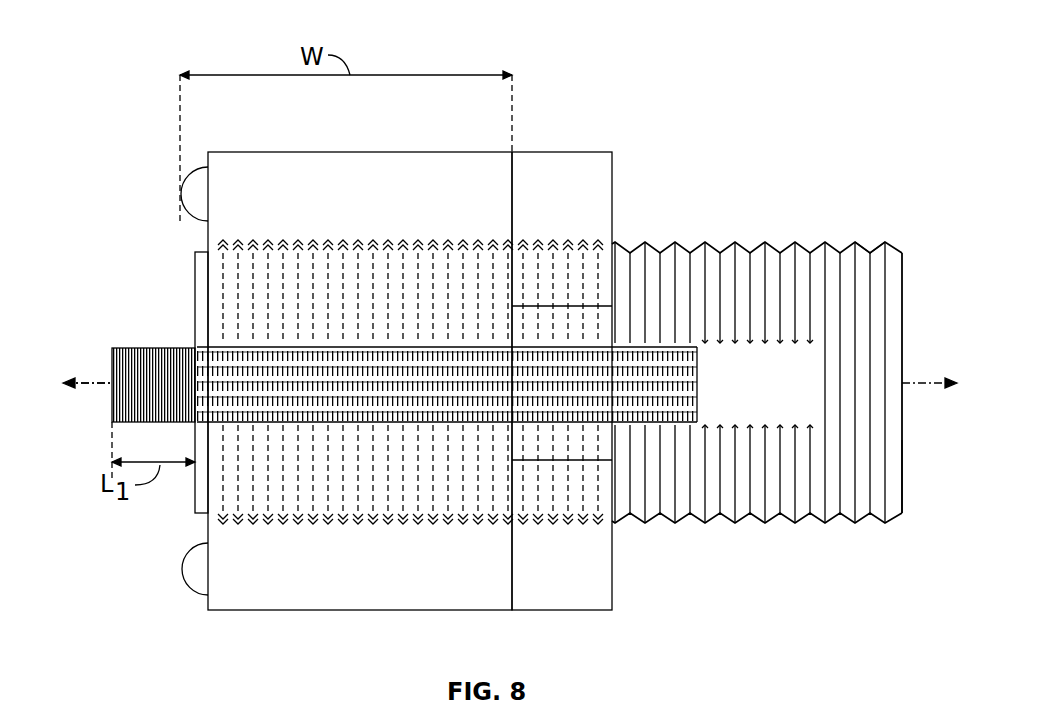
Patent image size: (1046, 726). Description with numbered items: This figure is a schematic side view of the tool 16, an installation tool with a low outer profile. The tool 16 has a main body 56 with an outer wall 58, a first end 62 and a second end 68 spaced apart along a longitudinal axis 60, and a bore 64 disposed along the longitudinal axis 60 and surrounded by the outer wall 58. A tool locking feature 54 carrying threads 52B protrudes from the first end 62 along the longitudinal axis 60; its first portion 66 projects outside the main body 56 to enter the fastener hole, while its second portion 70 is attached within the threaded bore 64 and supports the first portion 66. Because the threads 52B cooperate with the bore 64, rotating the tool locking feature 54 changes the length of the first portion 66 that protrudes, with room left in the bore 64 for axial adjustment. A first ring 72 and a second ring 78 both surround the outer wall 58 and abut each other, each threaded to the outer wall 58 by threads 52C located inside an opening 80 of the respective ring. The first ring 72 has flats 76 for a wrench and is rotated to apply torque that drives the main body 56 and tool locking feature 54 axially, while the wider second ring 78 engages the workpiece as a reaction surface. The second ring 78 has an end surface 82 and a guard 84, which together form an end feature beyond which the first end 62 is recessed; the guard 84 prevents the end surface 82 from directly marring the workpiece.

The tool 16 is at (825, 106).
The threads 52B is at (168, 347).
The threads 52C is at (300, 240).
The tool locking feature 54 is at (447, 384).
The main body 56 is at (875, 315).
The outer wall 58 is at (872, 253).
The longitudinal axis 60 is at (90, 388).
The first end 62 is at (193, 497).
The bore 64 is at (770, 415).
The first portion 66 is at (152, 357).
The second end 68 is at (902, 470).
The second portion 70 is at (650, 425).
The first ring 72 is at (562, 152).
The flats 76 is at (510, 305).
The second ring 78 is at (352, 152).
The opening 80 is at (258, 525).
The end surface 82 is at (207, 222).
The guard 84 is at (182, 569).